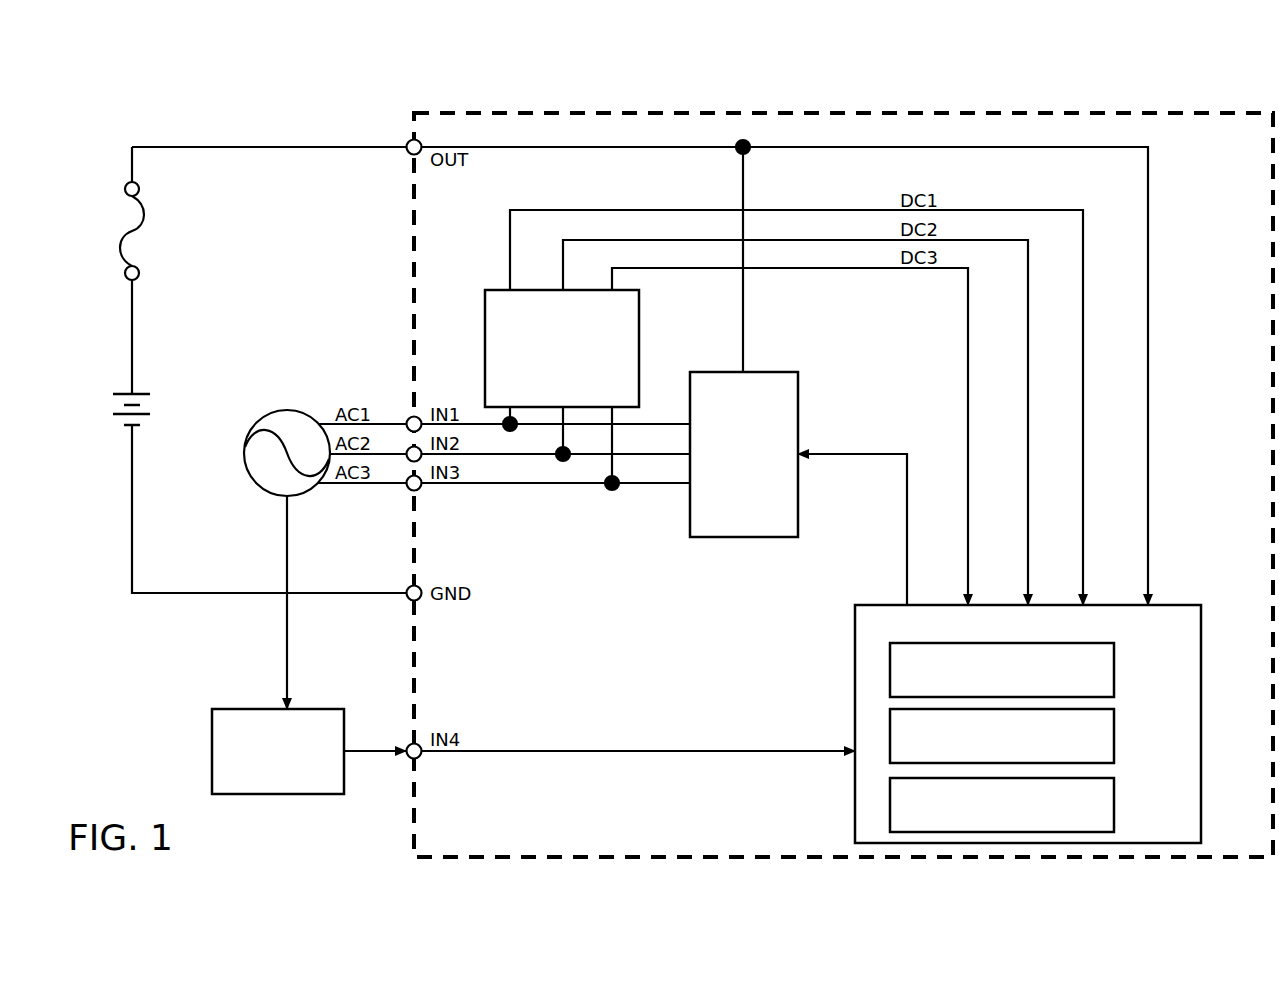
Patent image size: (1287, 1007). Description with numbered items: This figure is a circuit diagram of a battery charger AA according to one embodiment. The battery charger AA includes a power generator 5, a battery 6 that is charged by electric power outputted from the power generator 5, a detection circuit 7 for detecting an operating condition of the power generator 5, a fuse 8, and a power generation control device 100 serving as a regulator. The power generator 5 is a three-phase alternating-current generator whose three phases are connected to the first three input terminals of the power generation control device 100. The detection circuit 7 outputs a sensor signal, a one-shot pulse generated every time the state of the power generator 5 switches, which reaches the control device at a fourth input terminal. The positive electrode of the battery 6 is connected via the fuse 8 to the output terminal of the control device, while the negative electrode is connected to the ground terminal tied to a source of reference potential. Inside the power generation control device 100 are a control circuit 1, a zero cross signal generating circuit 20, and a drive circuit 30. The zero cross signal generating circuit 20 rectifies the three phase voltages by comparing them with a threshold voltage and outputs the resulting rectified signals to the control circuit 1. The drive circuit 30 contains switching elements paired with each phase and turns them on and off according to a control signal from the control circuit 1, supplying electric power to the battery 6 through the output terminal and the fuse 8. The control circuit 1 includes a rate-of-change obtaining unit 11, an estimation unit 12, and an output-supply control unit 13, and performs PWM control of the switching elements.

The power generation control device 100 is at (1138, 113).
The control circuit 1 is at (1052, 724).
The power generator 5 is at (243, 418).
The battery 6 is at (103, 390).
The detection circuit 7 is at (212, 732).
The fuse 8 is at (118, 213).
The rate-of-change obtaining unit 11 is at (1114, 680).
The estimation unit 12 is at (1114, 740).
The output-supply control unit 13 is at (1114, 808).
The zero cross signal generating circuit 20 is at (639, 330).
The drive circuit 30 is at (798, 396).
The battery charger AA is at (235, 137).